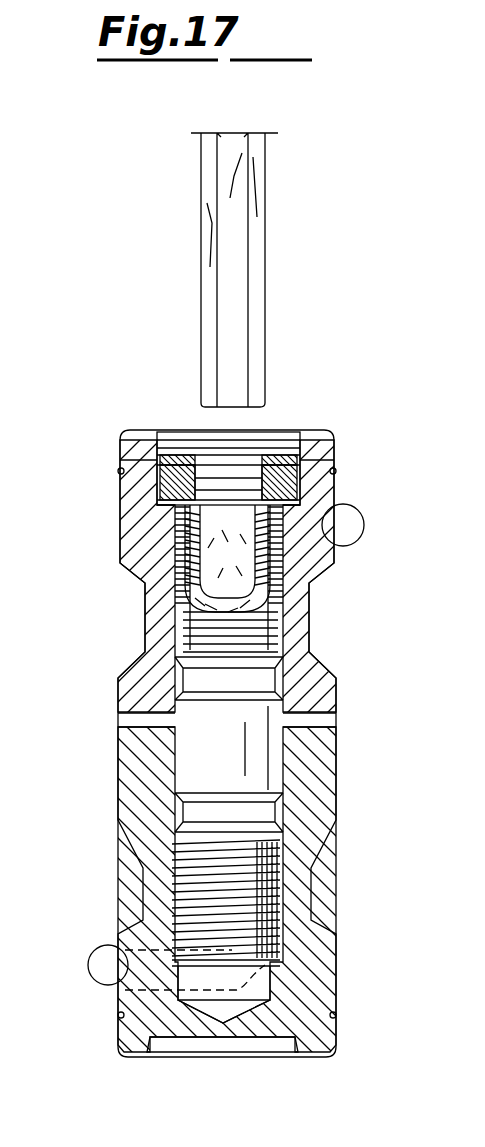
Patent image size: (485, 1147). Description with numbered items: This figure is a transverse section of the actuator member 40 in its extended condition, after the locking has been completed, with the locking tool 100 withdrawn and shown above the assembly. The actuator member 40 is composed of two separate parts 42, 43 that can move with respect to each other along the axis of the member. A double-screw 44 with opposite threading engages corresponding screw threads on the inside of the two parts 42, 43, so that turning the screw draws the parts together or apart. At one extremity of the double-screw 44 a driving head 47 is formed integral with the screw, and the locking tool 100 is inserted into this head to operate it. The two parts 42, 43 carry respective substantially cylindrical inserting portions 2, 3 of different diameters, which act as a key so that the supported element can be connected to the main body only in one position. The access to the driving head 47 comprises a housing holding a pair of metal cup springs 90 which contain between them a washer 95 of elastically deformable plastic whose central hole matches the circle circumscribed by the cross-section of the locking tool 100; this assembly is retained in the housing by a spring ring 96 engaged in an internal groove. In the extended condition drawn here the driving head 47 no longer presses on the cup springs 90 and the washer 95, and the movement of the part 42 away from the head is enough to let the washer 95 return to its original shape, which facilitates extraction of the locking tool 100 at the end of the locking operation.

The locking tool 100 is at (210, 152).
The actuator member 40 is at (108, 745).
The inserting portion 2 is at (318, 606).
The part 42 is at (118, 680).
The double-screw 44 is at (320, 744).
The part 43 is at (338, 773).
The inserting portion 3 is at (143, 885).
The driving head 47 is at (300, 570).
The washer 95 is at (162, 500).
The spring ring 96 is at (172, 458).
The cup springs 90 is at (268, 458).